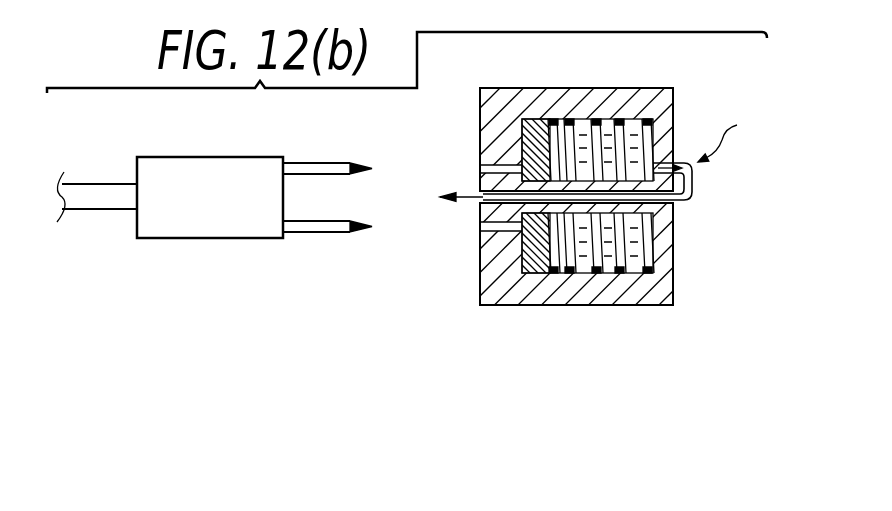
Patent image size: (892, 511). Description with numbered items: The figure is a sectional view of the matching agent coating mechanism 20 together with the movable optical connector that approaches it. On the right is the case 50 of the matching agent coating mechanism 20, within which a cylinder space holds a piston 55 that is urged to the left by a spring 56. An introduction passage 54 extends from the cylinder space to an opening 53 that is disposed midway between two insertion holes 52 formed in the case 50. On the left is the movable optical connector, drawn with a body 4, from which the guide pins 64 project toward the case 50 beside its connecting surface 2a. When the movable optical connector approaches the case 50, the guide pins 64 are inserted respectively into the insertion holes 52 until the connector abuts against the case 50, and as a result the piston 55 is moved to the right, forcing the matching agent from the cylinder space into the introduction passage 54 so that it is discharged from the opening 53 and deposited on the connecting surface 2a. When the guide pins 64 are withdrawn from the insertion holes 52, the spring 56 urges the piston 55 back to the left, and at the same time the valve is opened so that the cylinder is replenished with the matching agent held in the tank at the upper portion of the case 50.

The sensor body 4 is at (178, 225).
The guide pins 64 is at (313, 167).
The connecting surface 2a is at (287, 208).
The case 50 is at (660, 116).
The insertion holes 52 is at (495, 163).
The opening 53 is at (487, 207).
The introduction passage 54 is at (692, 197).
The piston 55 is at (547, 118).
The spring 56 is at (655, 252).
The matching agent coating mechanism 20 is at (730, 137).